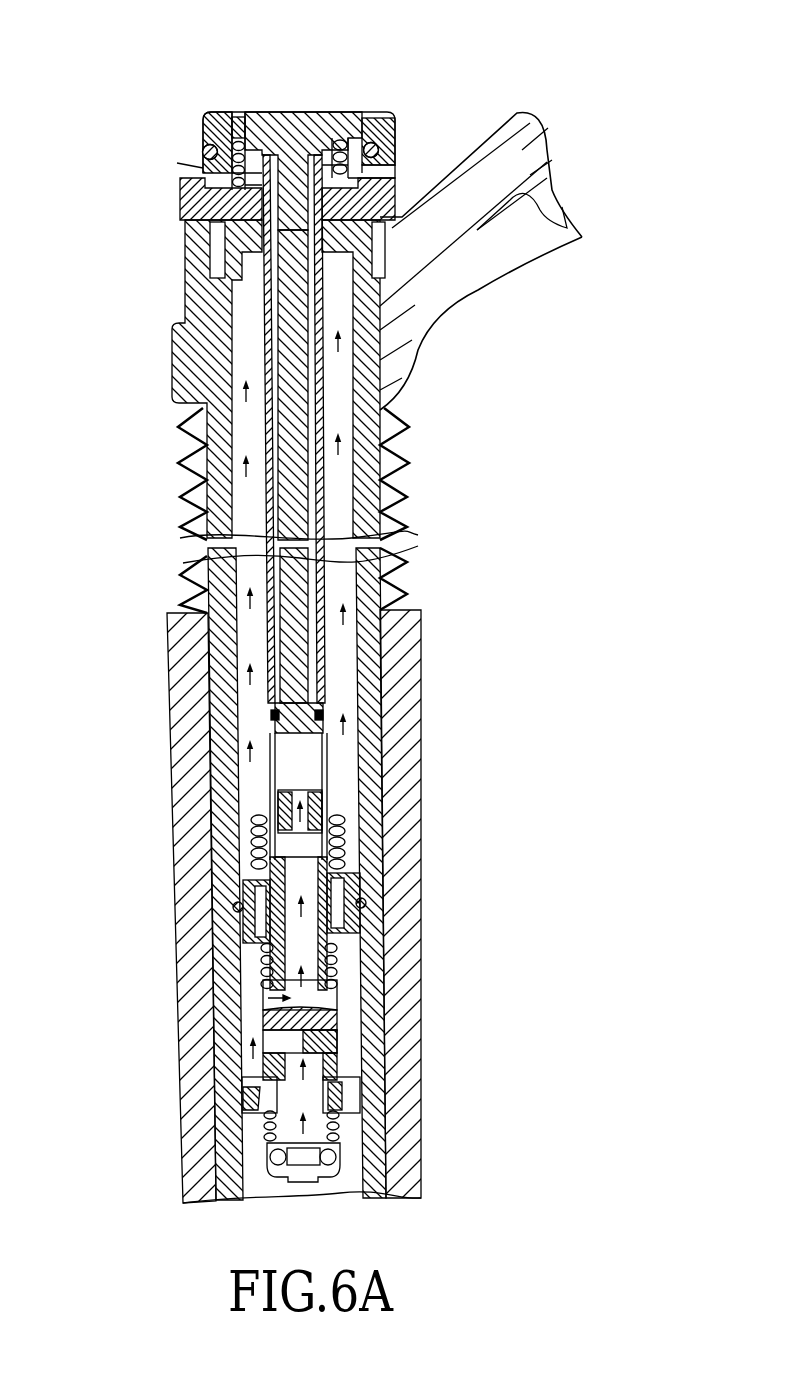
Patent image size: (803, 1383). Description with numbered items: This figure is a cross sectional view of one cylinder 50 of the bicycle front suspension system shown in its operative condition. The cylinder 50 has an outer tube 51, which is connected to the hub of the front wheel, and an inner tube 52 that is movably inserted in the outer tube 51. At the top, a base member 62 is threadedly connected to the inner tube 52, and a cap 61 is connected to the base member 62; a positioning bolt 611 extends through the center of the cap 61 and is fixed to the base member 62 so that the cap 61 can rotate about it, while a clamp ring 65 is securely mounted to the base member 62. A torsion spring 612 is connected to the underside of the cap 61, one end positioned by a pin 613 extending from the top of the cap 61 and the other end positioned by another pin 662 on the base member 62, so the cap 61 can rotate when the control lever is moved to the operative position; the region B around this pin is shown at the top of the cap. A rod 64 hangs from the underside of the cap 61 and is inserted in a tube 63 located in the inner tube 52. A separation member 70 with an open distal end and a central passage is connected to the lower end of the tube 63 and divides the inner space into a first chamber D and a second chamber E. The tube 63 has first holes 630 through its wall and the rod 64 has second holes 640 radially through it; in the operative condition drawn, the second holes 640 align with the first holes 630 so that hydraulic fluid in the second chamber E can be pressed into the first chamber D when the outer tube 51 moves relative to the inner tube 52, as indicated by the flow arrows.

The cylinder 50 is at (505, 897).
The outer tube 51 is at (193, 923).
The inner tube 52 is at (390, 573).
The cap 61 is at (220, 116).
The positioning bolt 611 is at (290, 110).
The torsion spring 612 is at (203, 130).
The pin 613 is at (238, 115).
The base member 62 is at (207, 272).
The tube 63 is at (305, 420).
The rod 64 is at (305, 420).
The clamp ring 65 is at (187, 188).
The pin 662 is at (395, 150).
The first holes 630 is at (325, 752).
The second holes 640 is at (292, 752).
The separation member 70 is at (245, 896).
The cap block region B is at (355, 120).
The first chamber D is at (257, 631).
The second chamber E is at (240, 992).